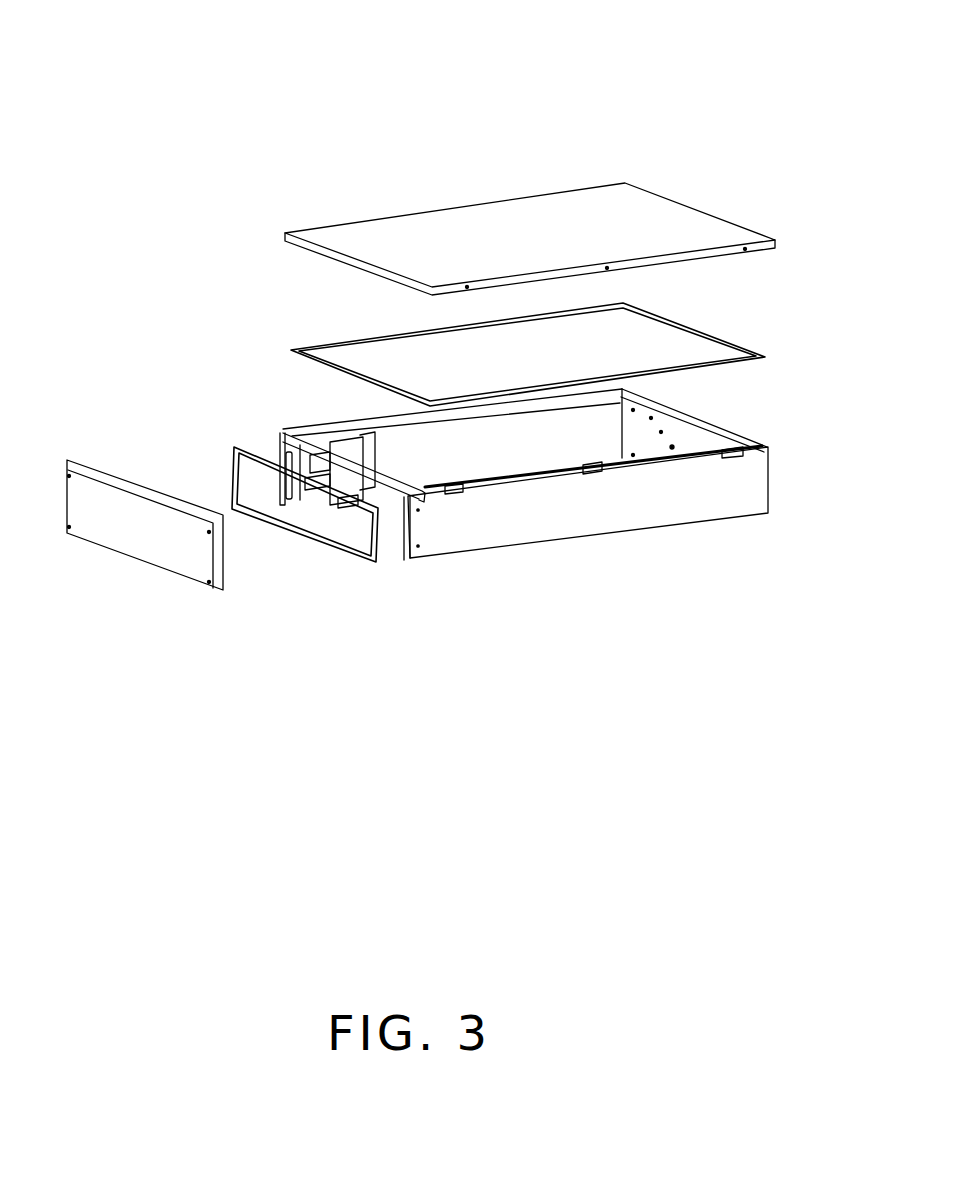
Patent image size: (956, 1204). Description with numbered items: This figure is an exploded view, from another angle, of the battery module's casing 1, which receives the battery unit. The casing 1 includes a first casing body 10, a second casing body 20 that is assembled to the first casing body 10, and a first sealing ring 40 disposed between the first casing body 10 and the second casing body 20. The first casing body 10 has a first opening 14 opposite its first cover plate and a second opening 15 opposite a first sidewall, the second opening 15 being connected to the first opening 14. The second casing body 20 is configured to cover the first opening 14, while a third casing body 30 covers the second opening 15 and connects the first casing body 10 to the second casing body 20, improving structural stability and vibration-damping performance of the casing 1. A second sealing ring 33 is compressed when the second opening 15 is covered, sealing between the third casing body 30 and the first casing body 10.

The casing 1 is at (323, 70).
The first casing body 10 is at (620, 515).
The first opening 14 is at (432, 437).
The second opening 15 is at (397, 527).
The second casing body 20 is at (703, 219).
The third casing body 30 is at (153, 548).
The second sealing ring 33 is at (302, 540).
The first sealing ring 40 is at (735, 347).